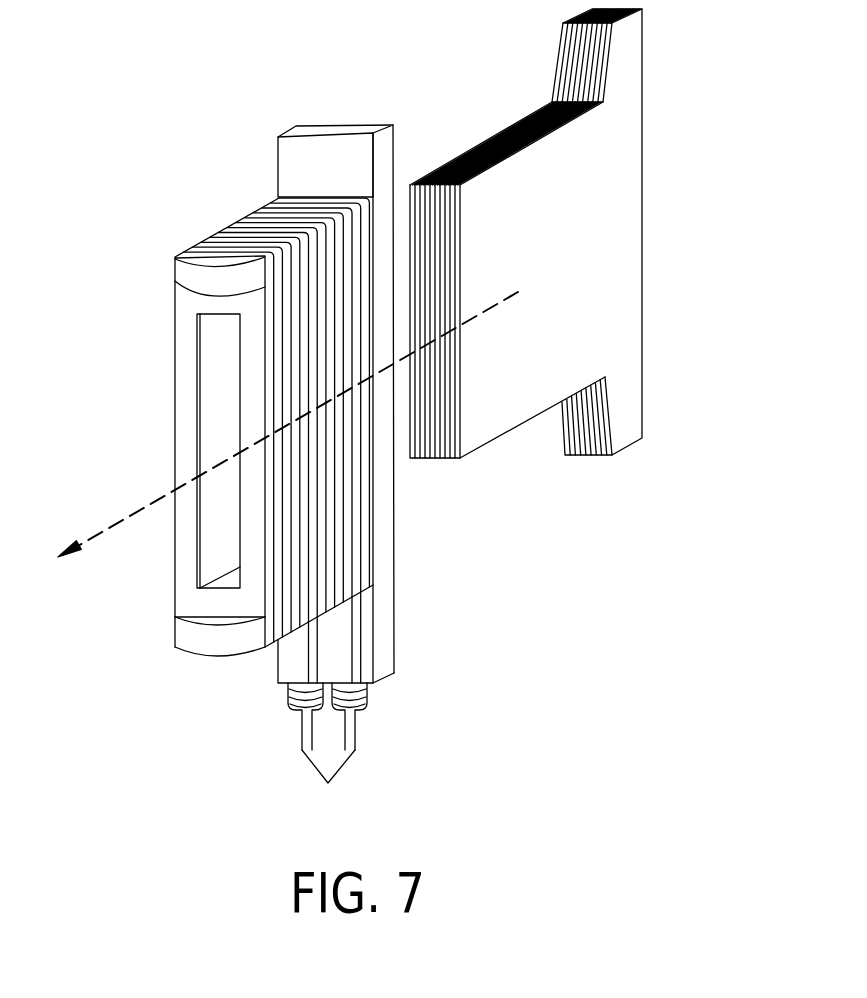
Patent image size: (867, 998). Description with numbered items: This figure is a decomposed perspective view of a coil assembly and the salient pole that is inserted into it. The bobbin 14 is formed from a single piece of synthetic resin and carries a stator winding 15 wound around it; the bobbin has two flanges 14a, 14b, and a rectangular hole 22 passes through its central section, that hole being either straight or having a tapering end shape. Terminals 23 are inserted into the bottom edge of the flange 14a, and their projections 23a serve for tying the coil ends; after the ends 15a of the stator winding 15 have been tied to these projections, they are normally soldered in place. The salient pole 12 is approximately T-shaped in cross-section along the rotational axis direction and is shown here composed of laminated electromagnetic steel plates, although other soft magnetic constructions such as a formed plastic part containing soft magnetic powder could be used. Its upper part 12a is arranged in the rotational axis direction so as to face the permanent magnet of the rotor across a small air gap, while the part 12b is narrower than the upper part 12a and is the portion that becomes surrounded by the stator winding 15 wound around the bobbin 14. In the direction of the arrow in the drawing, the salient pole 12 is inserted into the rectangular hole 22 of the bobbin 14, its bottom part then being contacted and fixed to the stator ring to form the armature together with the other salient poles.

The salient pole 12 is at (589, 250).
The upper part of the salient pole 12a is at (642, 162).
The lower part of the salient pole 12b is at (520, 402).
The bobbin 14 is at (185, 450).
The flange 14a is at (335, 145).
The flange 14b is at (200, 280).
The stator winding 15 is at (310, 386).
The ends of stator winding 15a is at (315, 662).
The rectangular hole 22 is at (200, 423).
The terminals 23 is at (330, 751).
The projections 23a is at (297, 713).